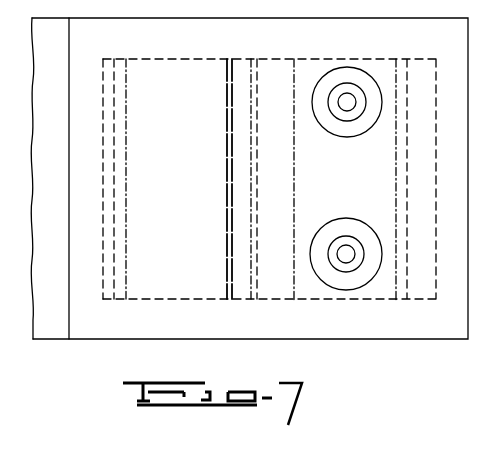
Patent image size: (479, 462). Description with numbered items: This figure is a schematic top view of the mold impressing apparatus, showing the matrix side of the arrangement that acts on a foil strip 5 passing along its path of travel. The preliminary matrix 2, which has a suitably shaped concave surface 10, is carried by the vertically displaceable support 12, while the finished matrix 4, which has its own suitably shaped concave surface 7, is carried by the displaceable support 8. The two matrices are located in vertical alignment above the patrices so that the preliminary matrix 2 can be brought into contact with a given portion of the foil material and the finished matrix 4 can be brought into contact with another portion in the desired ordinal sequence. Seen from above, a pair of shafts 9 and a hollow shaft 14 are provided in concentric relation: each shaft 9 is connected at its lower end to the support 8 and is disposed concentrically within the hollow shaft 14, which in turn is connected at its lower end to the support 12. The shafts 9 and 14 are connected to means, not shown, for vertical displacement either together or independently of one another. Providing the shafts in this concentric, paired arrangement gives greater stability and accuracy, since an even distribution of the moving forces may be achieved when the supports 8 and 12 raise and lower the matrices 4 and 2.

The preliminary matrix 2 is at (103, 215).
The finished matrix 4 is at (227, 252).
The foil strip 5 is at (56, 176).
The concave surface 7 is at (294, 290).
The displaceable support 8 is at (257, 285).
The shaft 9 is at (356, 107).
The concave surface 10 is at (126, 238).
The vertically displaceable support 12 is at (280, 201).
The hollow shaft 14 is at (340, 111).